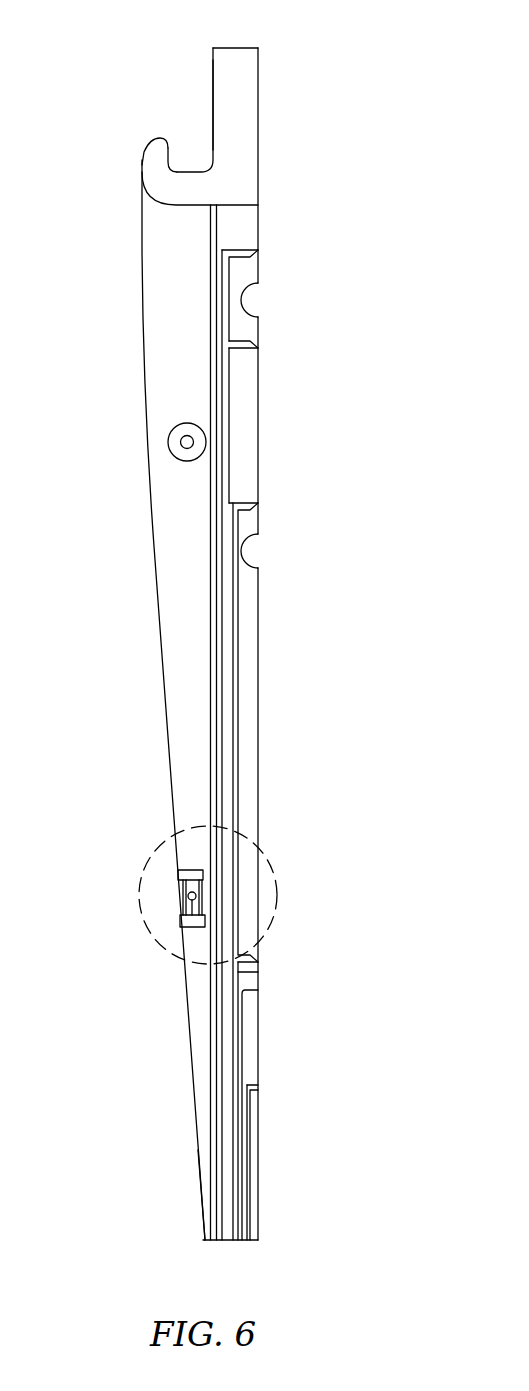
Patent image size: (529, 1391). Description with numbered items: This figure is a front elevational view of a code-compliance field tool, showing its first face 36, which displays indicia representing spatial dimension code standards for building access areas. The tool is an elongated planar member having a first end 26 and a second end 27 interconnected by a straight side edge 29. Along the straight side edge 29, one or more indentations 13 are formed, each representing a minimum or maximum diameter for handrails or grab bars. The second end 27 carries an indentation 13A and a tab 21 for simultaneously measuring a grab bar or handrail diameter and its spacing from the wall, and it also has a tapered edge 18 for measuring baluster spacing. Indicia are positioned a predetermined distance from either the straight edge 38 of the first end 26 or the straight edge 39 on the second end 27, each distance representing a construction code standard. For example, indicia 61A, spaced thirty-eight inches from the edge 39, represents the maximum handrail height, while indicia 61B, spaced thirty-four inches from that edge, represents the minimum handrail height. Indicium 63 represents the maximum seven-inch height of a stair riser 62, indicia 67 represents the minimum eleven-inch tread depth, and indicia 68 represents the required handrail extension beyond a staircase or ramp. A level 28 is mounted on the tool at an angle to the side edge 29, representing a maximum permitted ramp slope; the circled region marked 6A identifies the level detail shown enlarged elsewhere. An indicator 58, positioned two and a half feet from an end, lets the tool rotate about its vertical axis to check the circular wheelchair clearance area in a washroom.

The straight edge of the first end 38 is at (240, 47).
The tab 21 is at (258, 102).
The second end 27 is at (196, 71).
The indentation 13A is at (196, 147).
The tapered edge 18 is at (145, 150).
The first face 36 is at (196, 305).
The straight side edge 29 is at (258, 717).
The indicia 61A is at (258, 250).
The indicia 61B is at (258, 346).
The indentations 13 is at (262, 297).
The indicator 58 is at (167, 441).
The riser 62 is at (258, 503).
The level 28 is at (177, 897).
The detail circle 6A is at (277, 880).
The indicia 68 is at (258, 963).
The indicia 67 is at (258, 990).
The indicium 63 is at (258, 1087).
The first end 26 is at (190, 1228).
The straight edge of the second end 39 is at (230, 1241).